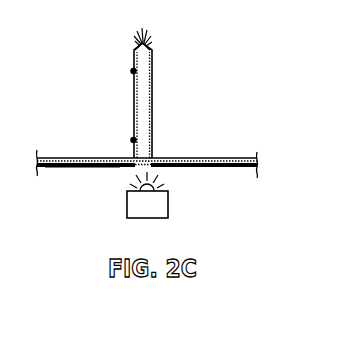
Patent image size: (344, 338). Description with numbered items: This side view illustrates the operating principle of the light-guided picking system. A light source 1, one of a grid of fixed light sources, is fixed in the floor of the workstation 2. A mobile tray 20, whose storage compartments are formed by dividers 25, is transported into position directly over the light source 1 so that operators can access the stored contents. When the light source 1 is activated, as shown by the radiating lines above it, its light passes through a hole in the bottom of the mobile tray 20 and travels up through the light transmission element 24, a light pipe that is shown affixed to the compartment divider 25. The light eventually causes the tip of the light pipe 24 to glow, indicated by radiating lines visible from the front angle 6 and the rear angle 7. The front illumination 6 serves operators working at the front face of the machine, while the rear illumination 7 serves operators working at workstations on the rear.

The light source 1 is at (157, 210).
The workstation 2 is at (69, 168).
The front angle illumination 6 is at (153, 48).
The rear angle illumination 7 is at (134, 50).
The mobile tray 20 is at (218, 157).
The light transmission element 24 is at (153, 72).
The divider 25 is at (134, 108).